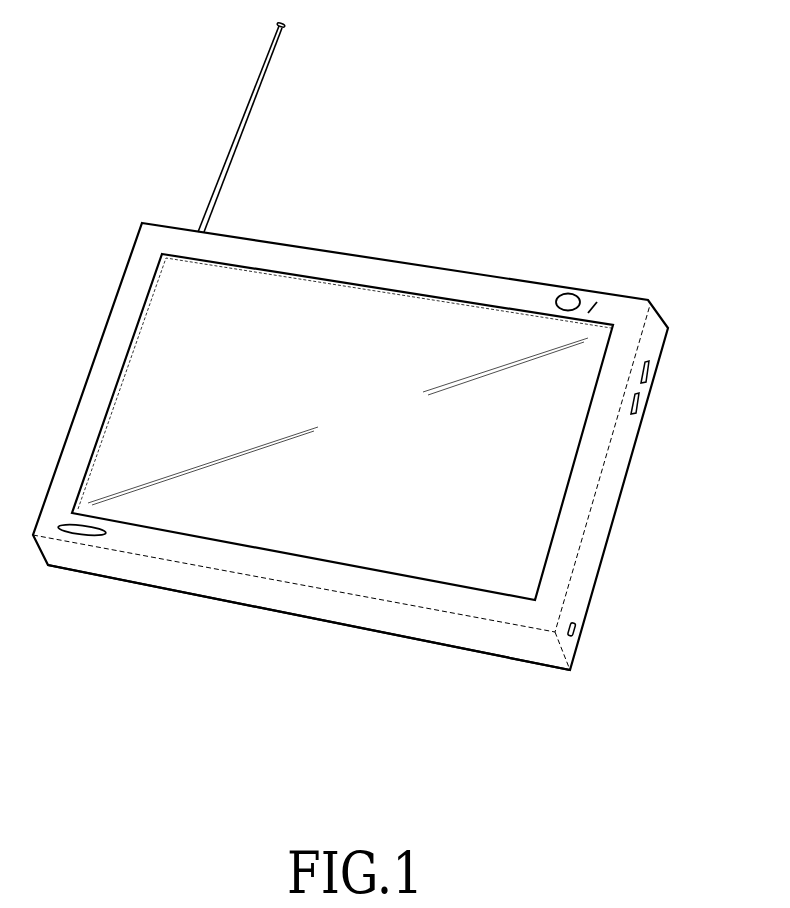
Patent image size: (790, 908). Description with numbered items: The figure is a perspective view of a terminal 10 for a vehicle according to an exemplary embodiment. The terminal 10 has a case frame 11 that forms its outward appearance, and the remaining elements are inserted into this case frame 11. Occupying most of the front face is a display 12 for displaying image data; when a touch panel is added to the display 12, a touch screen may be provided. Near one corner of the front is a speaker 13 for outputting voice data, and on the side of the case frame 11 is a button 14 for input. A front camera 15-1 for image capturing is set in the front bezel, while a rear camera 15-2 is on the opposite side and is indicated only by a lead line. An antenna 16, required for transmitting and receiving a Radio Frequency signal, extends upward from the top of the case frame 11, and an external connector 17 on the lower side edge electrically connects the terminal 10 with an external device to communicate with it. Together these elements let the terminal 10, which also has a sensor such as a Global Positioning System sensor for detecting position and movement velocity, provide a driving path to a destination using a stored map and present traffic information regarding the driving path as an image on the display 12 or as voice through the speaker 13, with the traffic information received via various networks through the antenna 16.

The terminal for a vehicle 10 is at (354, 436).
The case frame 11 is at (414, 618).
The display 12 is at (533, 512).
The speaker 13 is at (77, 534).
The button 14 is at (647, 391).
The front camera 15-1 is at (570, 296).
The rear camera 15-2 is at (603, 295).
The antenna 16 is at (257, 90).
The external connector 17 is at (578, 628).